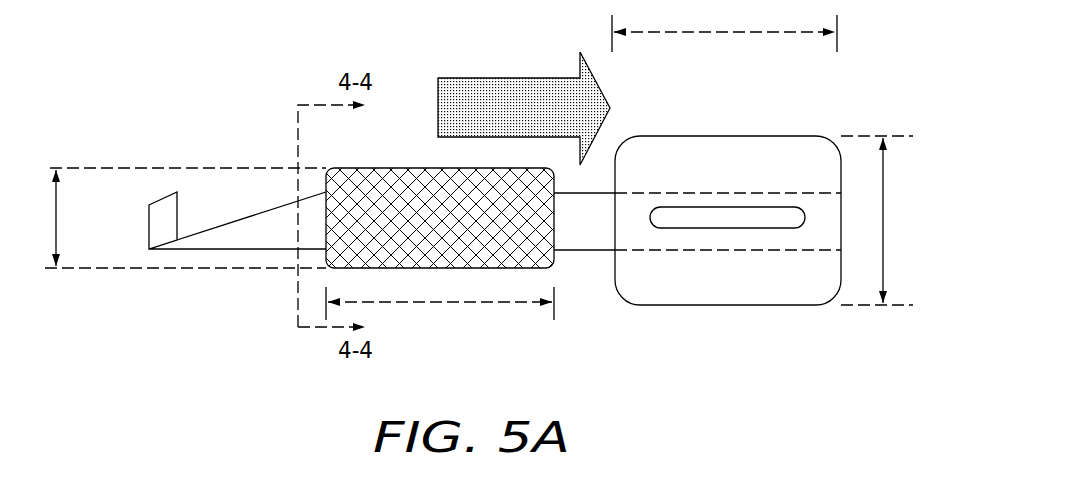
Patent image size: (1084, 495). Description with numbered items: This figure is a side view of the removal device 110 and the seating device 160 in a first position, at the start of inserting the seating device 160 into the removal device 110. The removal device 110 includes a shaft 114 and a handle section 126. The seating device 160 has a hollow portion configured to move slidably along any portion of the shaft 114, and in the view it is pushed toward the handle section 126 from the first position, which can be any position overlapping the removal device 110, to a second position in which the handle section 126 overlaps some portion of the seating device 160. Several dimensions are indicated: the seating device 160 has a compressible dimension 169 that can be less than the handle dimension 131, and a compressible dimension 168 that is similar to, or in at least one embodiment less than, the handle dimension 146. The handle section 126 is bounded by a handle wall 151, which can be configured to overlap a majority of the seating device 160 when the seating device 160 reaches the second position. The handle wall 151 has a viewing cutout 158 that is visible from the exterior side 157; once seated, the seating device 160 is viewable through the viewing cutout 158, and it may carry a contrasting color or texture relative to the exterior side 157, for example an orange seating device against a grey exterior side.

The removal device 110 is at (704, 118).
The shaft 114 is at (232, 240).
The handle section 126 is at (757, 311).
The handle dimension 131 is at (885, 243).
The handle dimension 146 is at (668, 34).
The handle wall 151 is at (649, 281).
The exterior side 157 is at (817, 271).
The viewing cutout 158 is at (684, 226).
The seating device 160 is at (545, 264).
The compressible dimension 168 is at (437, 303).
The compressible dimension 169 is at (58, 207).